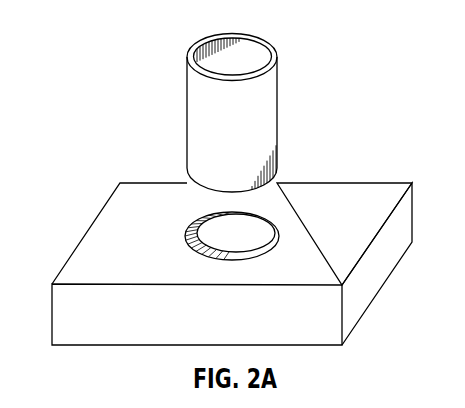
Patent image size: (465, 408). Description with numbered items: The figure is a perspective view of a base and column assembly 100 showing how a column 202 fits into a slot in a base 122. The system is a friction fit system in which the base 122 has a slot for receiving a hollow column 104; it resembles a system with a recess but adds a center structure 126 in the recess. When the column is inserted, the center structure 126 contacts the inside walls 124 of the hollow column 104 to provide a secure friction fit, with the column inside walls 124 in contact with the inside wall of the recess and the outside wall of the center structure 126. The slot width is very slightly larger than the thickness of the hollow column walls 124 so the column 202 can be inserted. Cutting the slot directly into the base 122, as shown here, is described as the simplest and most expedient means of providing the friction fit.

The base and column assembly 100 is at (341, 44).
The hollow column 104 is at (260, 235).
The base 122 is at (113, 230).
The inside walls of the hollow column 124 is at (260, 75).
The center structure 126 is at (280, 223).
The column 202 is at (186, 112).